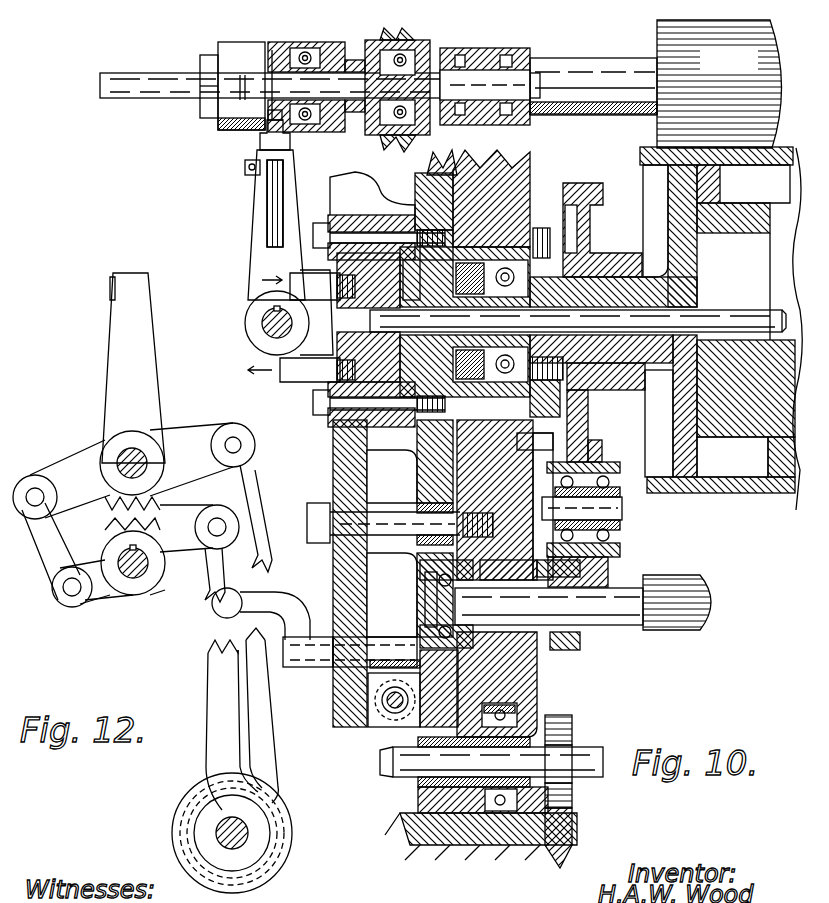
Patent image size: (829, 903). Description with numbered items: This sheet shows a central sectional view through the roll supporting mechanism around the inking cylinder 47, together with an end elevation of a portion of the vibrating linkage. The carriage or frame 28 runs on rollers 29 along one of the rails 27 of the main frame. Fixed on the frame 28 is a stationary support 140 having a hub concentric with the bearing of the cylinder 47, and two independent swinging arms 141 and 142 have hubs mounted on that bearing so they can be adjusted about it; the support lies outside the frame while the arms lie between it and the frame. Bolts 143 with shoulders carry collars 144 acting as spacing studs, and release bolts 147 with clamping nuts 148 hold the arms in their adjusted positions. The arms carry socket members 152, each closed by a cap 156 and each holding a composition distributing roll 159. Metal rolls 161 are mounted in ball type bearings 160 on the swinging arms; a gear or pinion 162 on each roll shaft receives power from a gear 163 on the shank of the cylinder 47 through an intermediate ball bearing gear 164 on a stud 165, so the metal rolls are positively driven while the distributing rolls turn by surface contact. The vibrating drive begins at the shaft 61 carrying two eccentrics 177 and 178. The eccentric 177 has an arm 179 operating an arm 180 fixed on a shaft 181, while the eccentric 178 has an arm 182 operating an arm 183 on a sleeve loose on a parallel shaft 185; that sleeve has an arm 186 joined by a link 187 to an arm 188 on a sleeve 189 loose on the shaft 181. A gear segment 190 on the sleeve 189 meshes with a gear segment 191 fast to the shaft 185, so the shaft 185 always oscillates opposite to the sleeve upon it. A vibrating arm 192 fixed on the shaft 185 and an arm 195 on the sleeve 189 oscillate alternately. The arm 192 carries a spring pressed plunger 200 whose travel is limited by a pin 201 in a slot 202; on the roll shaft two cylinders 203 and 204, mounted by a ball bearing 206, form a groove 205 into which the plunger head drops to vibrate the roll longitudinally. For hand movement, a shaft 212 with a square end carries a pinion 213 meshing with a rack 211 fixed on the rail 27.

In FIG. 10, the rails 27 is at (450, 840).
In FIG. 10, the carriage or frame 28 is at (533, 178).
In FIG. 10, the rollers 29 is at (500, 812).
In FIG. 10, the inking cylinder 47 is at (666, 336).
In FIG. 12, the shaft 61 is at (216, 835).
In FIG. 10, the stationary support 140 is at (340, 445).
In FIG. 10, the swinging arm 141 is at (478, 125).
In FIG. 10, the swinging arm 142 is at (395, 210).
In FIG. 10, the bolts 143 is at (320, 503).
In FIG. 10, the collars 144 is at (390, 512).
In FIG. 10, the release bolts 147 is at (386, 637).
In FIG. 10, the clamping nuts 148 is at (313, 630).
In FIG. 10, the socket members 152 is at (405, 148).
In FIG. 10, the cap 156 is at (392, 30).
In FIG. 10, the composition distributing roll 159 is at (656, 84).
In FIG. 10, the bearings 160 is at (480, 640).
In FIG. 10, the metal rolls 161 is at (718, 614).
In FIG. 10, the gear or pinion 162 is at (600, 590).
In FIG. 10, the gear 163 is at (602, 425).
In FIG. 10, the intermediate ball bearing gear 164 is at (620, 548).
In FIG. 10, the stud 165 is at (610, 507).
In FIG. 12, the eccentric 177 is at (292, 830).
In FIG. 12, the eccentric 178 is at (192, 812).
In FIG. 10, the arm 179 is at (262, 553).
In FIG. 12, the arm 179 is at (266, 691).
In FIG. 10, the arm 180 is at (207, 425).
In FIG. 10, the shaft 181 is at (148, 470).
In FIG. 12, the arm 182 is at (210, 668).
In FIG. 10, the arm 183 is at (190, 575).
In FIG. 10, the shaft 185 is at (262, 322).
In FIG. 10, the arm 186 is at (92, 600).
In FIG. 10, the link 187 is at (50, 555).
In FIG. 10, the arm 188 is at (67, 470).
In FIG. 10, the sleeve 189 is at (125, 440).
In FIG. 10, the gear segment 190 is at (165, 500).
In FIG. 10, the gear segment 191 is at (115, 520).
In FIG. 10, the vibrating arm 192 is at (262, 255).
In FIG. 10, the arm 195 is at (114, 360).
In FIG. 10, the spring pressed plunger 200 is at (270, 145).
In FIG. 10, the pin 201 is at (248, 168).
In FIG. 10, the slot 202 is at (290, 157).
In FIG. 10, the cylinder 203 is at (228, 48).
In FIG. 10, the cylinder 204 is at (318, 42).
In FIG. 10, the groove 205 is at (272, 50).
In FIG. 10, the ball bearing 206 is at (310, 52).
In FIG. 10, the rack 211 is at (575, 825).
In FIG. 10, the shaft 212 is at (430, 755).
In FIG. 10, the pinion 213 is at (573, 730).